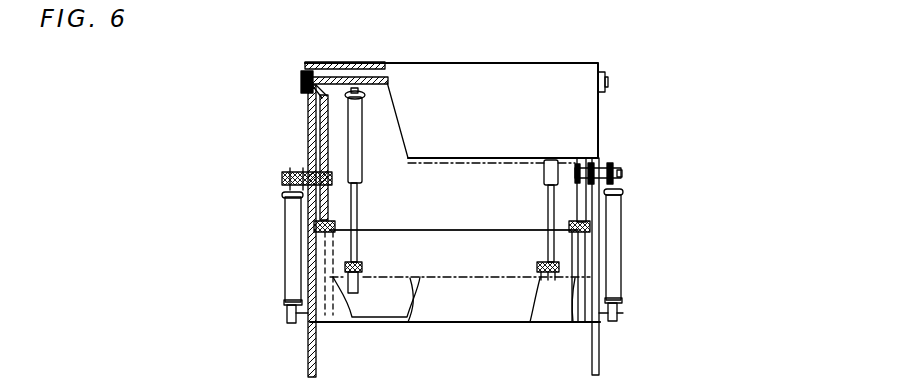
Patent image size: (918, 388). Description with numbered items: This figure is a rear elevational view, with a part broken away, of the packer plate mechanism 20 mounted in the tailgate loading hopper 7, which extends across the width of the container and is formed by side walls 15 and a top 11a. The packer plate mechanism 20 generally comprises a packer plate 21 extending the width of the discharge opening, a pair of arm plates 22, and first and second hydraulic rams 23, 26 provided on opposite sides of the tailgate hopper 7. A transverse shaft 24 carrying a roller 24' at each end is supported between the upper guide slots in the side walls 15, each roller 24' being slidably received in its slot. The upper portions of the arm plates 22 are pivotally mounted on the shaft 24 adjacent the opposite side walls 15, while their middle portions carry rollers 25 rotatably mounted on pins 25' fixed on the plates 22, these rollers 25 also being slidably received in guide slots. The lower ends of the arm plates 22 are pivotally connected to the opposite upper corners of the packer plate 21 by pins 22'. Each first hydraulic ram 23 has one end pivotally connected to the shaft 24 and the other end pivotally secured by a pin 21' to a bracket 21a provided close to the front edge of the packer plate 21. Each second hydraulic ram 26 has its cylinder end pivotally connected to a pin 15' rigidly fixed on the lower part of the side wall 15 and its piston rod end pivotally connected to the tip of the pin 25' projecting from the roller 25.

The tailgate loading hopper 7 is at (608, 82).
The top 11a is at (486, 79).
The side walls 15 is at (454, 231).
The pin 15' is at (460, 339).
The packer plate mechanism 20 is at (473, 177).
The packer plate 21 is at (454, 213).
The pin 21' is at (452, 268).
The bracket 21a is at (374, 281).
The arm plates 22 is at (454, 151).
The pins 22' is at (468, 255).
The first hydraulic rams 23 is at (360, 171).
The transverse shaft 24 is at (354, 64).
The roller 24' is at (307, 67).
The rollers 25 is at (316, 160).
The pins 25' is at (626, 169).
The second hydraulic rams 26 is at (293, 262).